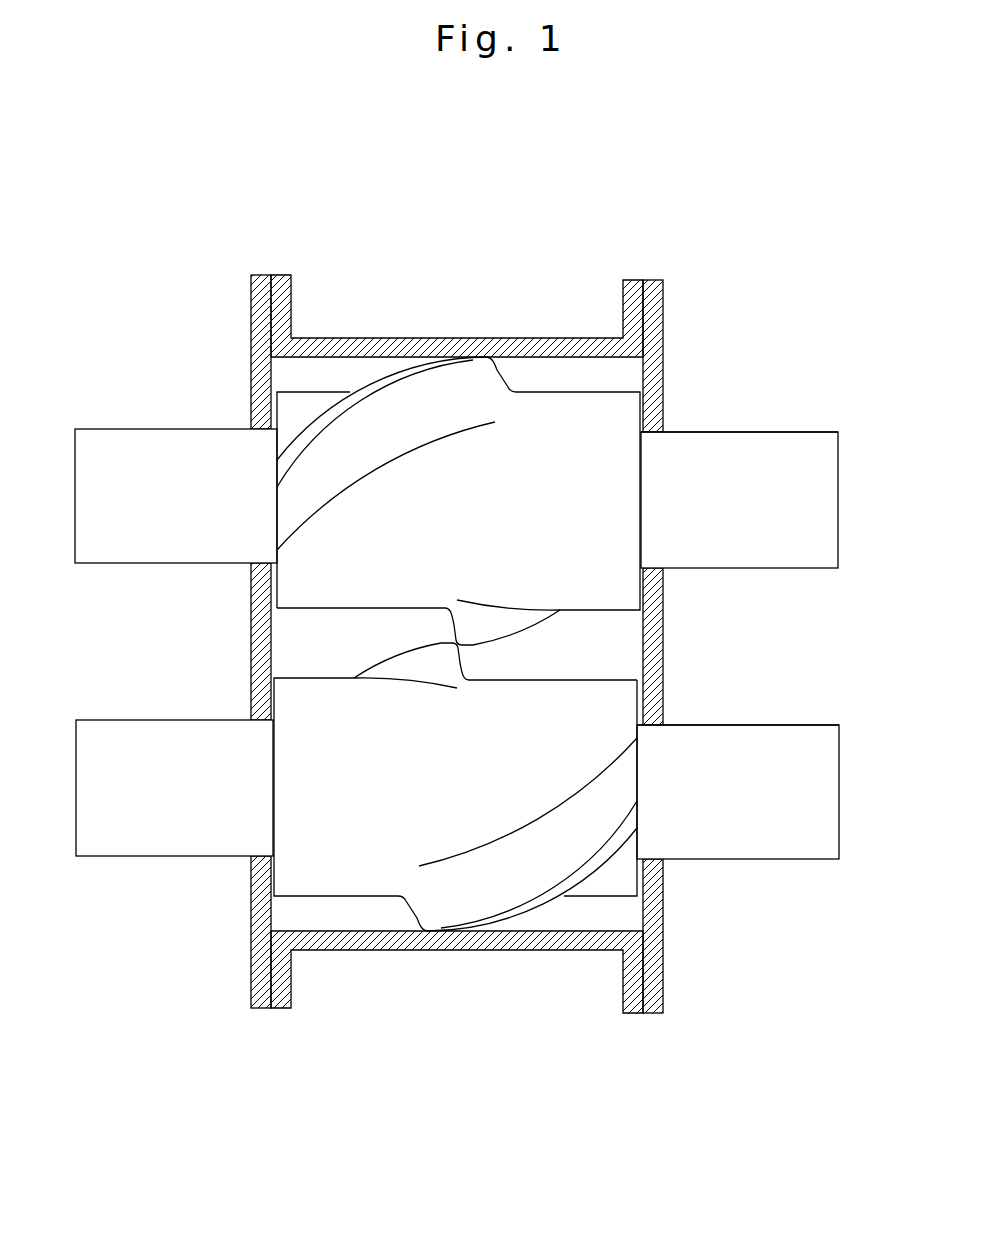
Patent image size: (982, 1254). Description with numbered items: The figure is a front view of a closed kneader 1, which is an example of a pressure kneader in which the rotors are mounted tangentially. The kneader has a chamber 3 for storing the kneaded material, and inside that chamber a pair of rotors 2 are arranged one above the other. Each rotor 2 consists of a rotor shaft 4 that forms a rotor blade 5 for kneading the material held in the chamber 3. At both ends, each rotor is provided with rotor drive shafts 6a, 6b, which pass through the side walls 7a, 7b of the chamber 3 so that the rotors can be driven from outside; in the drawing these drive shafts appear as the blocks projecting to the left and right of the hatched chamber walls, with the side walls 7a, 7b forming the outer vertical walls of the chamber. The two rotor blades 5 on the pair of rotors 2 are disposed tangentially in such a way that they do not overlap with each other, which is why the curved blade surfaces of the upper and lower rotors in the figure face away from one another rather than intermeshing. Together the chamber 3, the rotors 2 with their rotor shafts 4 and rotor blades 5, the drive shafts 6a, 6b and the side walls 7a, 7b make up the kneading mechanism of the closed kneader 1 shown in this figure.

The closed kneader 1 is at (459, 644).
The rotor 2 is at (718, 432).
The chamber 3 is at (367, 338).
The rotor shaft 4 is at (492, 500).
The rotor blade 5 is at (432, 405).
The rotor drive shaft 6a is at (753, 488).
The rotor drive shaft 6b is at (158, 500).
The side wall 7a is at (665, 980).
The side wall 7b is at (249, 977).